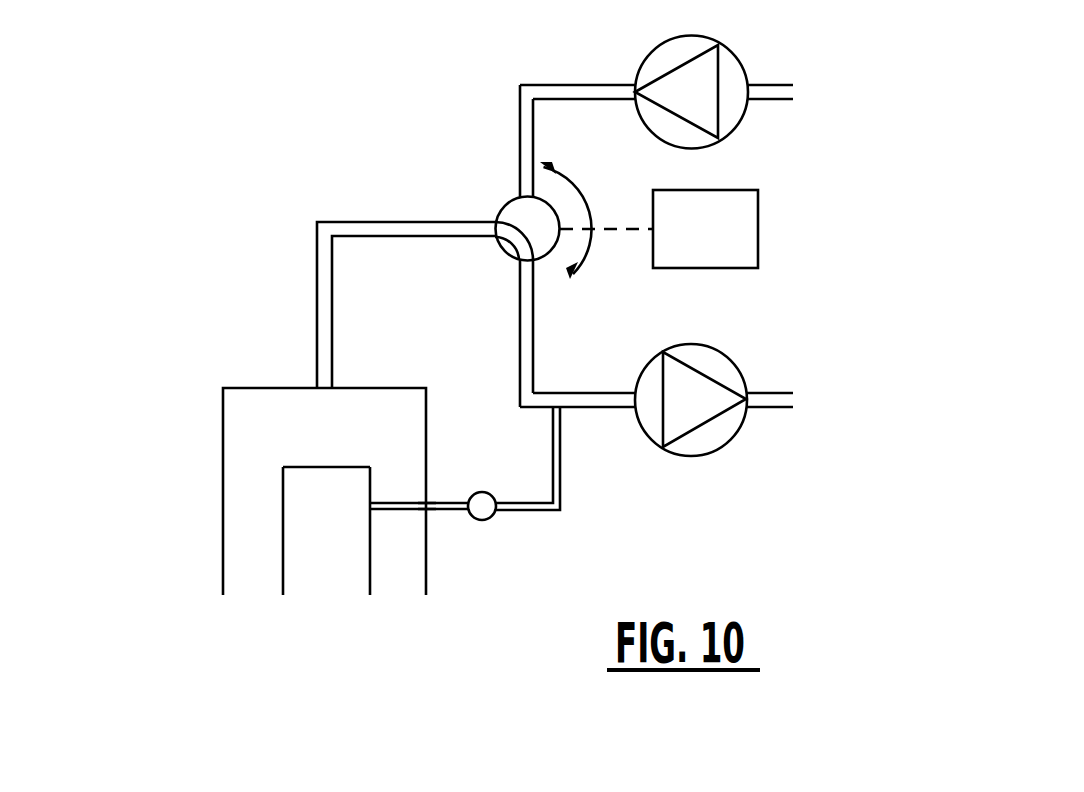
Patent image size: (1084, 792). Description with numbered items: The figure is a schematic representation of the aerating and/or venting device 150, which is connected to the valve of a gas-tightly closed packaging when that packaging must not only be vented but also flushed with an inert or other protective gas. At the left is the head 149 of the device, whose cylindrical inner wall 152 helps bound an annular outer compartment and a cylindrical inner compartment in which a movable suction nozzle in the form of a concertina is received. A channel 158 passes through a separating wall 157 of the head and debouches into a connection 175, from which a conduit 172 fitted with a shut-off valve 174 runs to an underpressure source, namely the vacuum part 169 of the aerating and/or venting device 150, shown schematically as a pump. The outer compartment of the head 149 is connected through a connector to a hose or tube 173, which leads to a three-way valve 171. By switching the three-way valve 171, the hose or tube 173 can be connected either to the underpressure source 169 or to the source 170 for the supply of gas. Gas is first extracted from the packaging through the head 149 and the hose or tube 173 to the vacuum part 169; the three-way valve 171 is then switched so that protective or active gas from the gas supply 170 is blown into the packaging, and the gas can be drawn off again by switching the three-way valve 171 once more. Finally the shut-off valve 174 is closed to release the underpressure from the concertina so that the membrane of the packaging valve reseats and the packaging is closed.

The head 149 is at (193, 458).
The aerating and/or venting device 150 is at (783, 225).
The cylindrical inner wall 152 is at (285, 527).
The separating wall 157 is at (310, 467).
The channel 158 is at (402, 509).
The vacuum part 169 is at (700, 494).
The gas supply source 170 is at (768, 58).
The three-way valve 171 is at (518, 213).
The conduit 172 is at (558, 492).
The hose or tube 173 is at (385, 222).
The shut-off valve 174 is at (482, 520).
The connection 175 is at (427, 505).